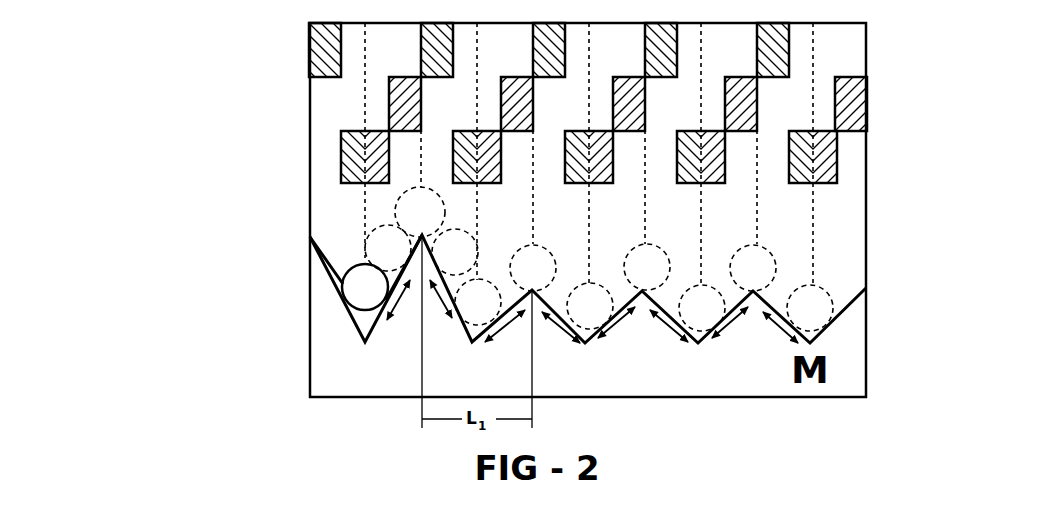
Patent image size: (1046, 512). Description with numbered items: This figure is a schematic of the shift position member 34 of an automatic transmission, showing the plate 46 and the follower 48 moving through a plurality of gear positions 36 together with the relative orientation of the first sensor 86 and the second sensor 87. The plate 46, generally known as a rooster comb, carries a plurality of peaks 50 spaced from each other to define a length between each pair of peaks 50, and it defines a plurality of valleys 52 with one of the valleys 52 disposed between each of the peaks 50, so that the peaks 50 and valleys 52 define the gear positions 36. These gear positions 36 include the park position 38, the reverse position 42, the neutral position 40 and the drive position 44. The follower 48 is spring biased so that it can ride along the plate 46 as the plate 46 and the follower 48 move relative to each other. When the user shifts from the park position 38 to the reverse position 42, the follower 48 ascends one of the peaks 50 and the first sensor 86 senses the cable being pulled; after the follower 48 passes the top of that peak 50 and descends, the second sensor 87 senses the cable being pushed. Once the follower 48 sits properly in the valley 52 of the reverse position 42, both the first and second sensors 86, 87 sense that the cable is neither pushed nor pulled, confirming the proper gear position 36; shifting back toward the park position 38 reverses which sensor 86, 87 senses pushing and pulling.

The shift position member 34 is at (291, 338).
The gear positions 36 is at (869, 289).
The park position 38 is at (376, 368).
The neutral position 40 is at (598, 372).
The reverse position 42 is at (487, 372).
The drive position 44 is at (711, 372).
The plate 46 is at (846, 361).
The follower 48 is at (372, 246).
The peaks 50 is at (651, 298).
The valleys 52 is at (365, 342).
The first sensor 86 is at (309, 103).
The second sensor 87 is at (309, 50).